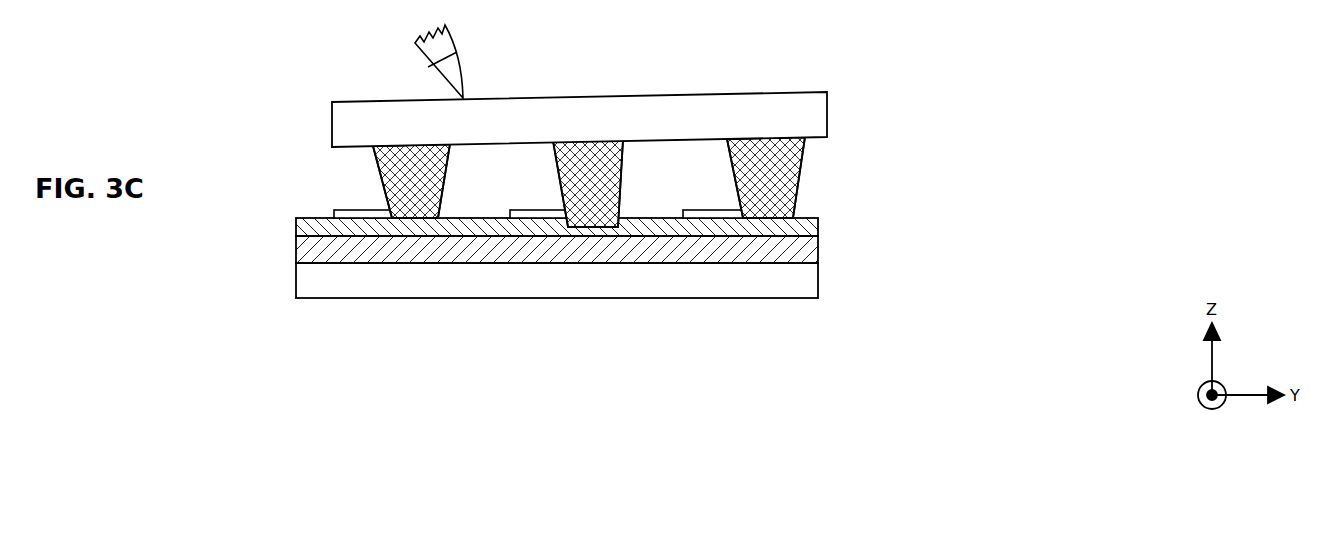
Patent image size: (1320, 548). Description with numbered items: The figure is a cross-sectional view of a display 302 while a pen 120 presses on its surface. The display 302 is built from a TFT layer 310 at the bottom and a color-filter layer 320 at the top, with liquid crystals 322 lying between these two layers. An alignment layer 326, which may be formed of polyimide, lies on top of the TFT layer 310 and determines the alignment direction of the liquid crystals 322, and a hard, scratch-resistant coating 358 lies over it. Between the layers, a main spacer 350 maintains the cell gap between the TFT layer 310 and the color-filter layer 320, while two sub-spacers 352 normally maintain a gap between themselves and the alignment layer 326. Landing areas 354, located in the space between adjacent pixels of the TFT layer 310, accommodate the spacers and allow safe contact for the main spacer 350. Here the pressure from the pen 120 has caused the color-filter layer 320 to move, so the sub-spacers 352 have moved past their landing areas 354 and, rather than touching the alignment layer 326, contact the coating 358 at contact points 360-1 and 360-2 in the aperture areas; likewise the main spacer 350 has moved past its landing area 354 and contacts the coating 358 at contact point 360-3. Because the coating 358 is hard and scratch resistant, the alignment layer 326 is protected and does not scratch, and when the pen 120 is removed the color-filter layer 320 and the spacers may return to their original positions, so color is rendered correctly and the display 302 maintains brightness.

The pen 120 is at (418, 52).
The display 302 is at (1152, 136).
The TFT layer 310 is at (819, 281).
The color-filter layer 320 is at (827, 92).
The liquid crystals 322 is at (513, 176).
The alignment layer 326 is at (819, 248).
The main spacer 350 is at (604, 166).
The sub-spacers 352 is at (428, 175).
The landing areas 354 is at (351, 210).
The coating 358 is at (819, 222).
The contact point 360-1 is at (445, 219).
The contact point 360-2 is at (618, 220).
The contact point 360-3 is at (797, 208).